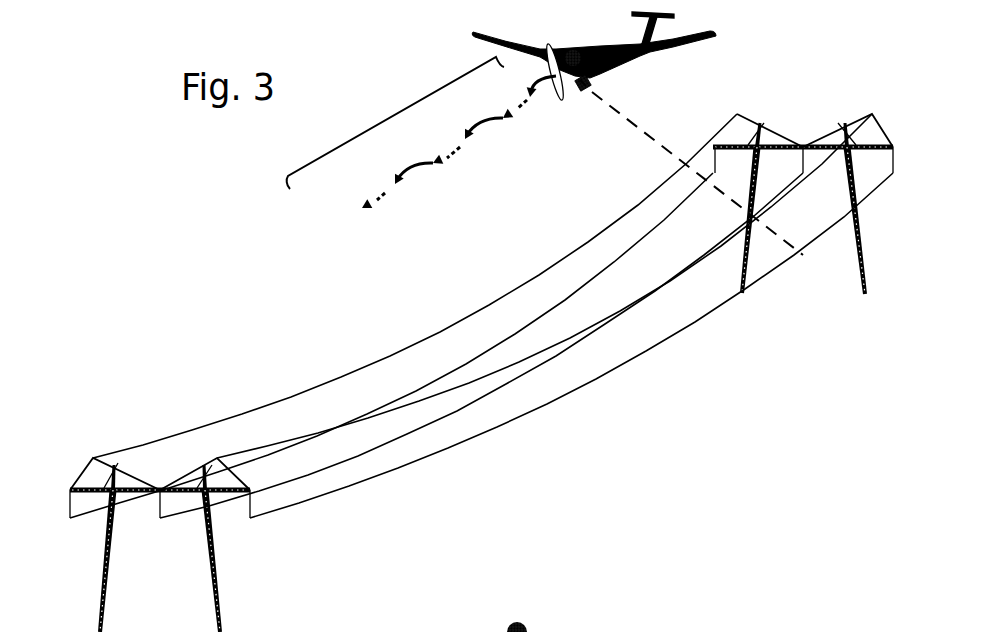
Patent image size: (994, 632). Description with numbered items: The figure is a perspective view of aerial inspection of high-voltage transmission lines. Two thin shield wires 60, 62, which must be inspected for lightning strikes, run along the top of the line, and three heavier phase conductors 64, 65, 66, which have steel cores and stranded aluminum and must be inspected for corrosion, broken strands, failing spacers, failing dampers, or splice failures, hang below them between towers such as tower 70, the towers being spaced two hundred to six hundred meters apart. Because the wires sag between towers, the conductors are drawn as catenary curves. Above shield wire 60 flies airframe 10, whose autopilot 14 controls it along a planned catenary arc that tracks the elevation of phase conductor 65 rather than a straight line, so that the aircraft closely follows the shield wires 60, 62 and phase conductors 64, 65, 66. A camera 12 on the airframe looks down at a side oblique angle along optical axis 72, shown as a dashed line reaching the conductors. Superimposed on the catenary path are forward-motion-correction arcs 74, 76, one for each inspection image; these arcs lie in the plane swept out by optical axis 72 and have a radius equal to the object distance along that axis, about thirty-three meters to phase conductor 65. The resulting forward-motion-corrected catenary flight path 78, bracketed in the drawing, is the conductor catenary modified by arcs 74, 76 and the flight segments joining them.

The airframe 10 is at (538, 48).
The camera 12 is at (598, 82).
The autopilot 14 is at (573, 53).
The shield wire 60 is at (227, 420).
The shield wire 62 is at (253, 452).
The phase conductor 64 is at (105, 512).
The phase conductor 65 is at (180, 517).
The phase conductor 66 is at (270, 518).
The tower 70 is at (865, 297).
The optical axis 72 is at (800, 257).
The FMC arc 74 is at (536, 80).
The FMC arc 76 is at (478, 125).
The FMC catenary flight path 78 is at (355, 132).